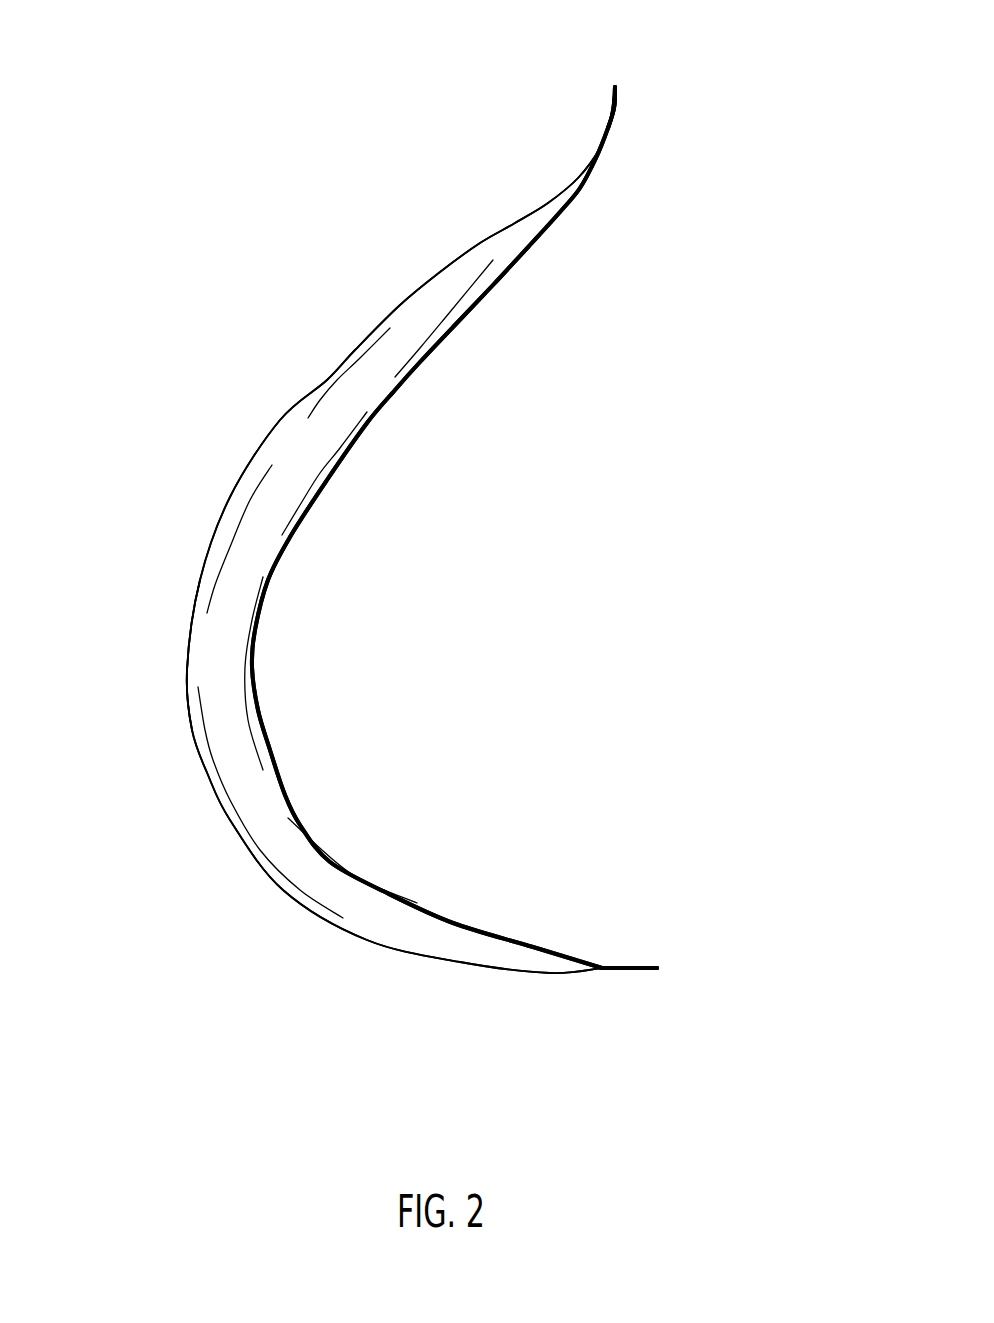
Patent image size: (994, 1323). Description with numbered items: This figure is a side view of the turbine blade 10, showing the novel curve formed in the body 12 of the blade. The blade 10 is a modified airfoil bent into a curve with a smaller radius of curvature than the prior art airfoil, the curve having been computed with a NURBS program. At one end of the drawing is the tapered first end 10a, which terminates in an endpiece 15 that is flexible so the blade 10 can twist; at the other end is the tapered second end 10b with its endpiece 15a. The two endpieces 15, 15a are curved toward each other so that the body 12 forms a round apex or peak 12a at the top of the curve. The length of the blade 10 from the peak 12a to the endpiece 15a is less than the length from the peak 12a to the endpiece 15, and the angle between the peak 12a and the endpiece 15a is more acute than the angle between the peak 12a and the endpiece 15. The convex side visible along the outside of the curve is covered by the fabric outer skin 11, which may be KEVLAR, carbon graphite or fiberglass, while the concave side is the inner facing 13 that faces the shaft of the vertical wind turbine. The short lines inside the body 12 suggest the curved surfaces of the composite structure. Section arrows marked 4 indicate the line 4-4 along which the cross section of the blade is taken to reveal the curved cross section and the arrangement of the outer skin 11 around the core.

The turbine blade 10 is at (236, 242).
The tapered first end 10a is at (590, 62).
The tapered second end 10b is at (641, 1003).
The outer skin 11 is at (217, 802).
The body 12 is at (212, 643).
The peak 12a is at (185, 665).
The inner facing 13 is at (290, 537).
The endpiece 15 is at (613, 119).
The endpiece 15a is at (623, 968).
The section line 4- 4 is at (170, 687).